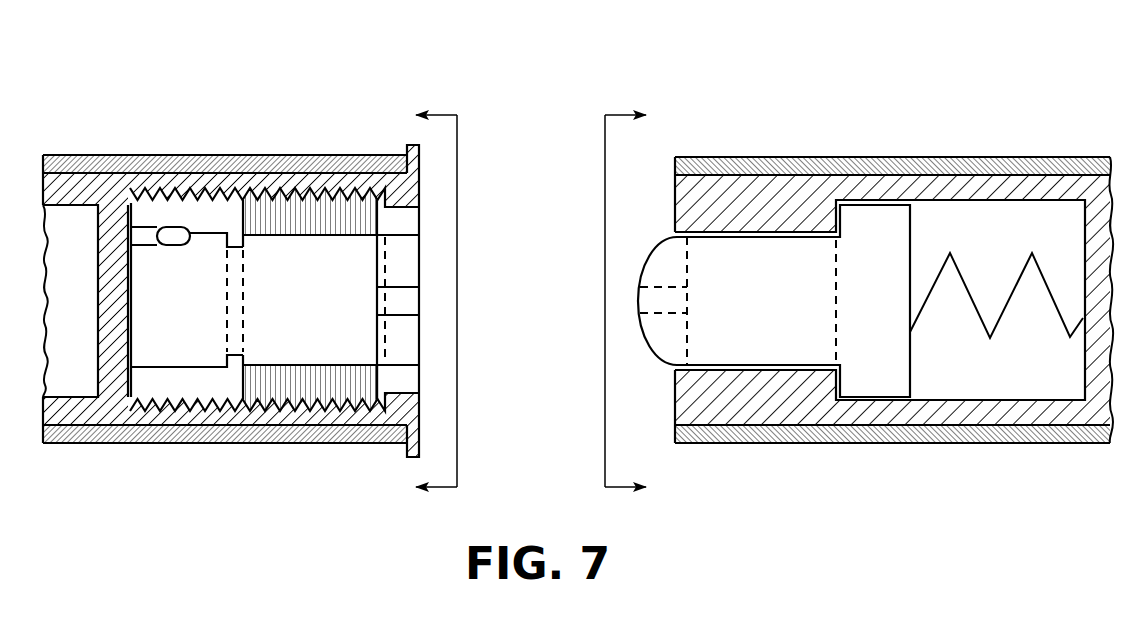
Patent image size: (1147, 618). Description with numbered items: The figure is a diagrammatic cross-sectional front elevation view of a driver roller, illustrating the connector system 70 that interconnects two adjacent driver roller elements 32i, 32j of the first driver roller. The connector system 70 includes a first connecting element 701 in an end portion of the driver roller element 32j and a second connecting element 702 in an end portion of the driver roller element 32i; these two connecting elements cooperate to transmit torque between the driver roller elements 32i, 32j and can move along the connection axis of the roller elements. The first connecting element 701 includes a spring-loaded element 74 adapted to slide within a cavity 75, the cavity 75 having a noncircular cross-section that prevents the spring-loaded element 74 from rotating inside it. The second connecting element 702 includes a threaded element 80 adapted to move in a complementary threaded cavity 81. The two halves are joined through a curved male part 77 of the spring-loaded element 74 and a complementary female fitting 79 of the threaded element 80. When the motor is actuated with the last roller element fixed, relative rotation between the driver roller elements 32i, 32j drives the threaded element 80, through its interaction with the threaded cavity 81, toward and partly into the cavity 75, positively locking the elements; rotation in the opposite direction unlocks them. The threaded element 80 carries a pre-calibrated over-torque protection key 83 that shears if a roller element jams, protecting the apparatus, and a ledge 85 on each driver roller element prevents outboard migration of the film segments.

The connector system 70 is at (588, 82).
The first connecting element 701 is at (626, 302).
The second connecting element 702 is at (434, 302).
The driver roller element 32i is at (178, 168).
The driver roller element 32j is at (928, 168).
The spring-loaded element 74 is at (780, 348).
The cavity 75 is at (1020, 366).
The curved male part 77 is at (656, 333).
The female fitting 79 is at (410, 345).
The threaded element 80 is at (280, 340).
The threaded cavity 81 is at (273, 208).
The pre-calibrated over-torque protection key 83 is at (168, 232).
The ledge 85 is at (416, 152).